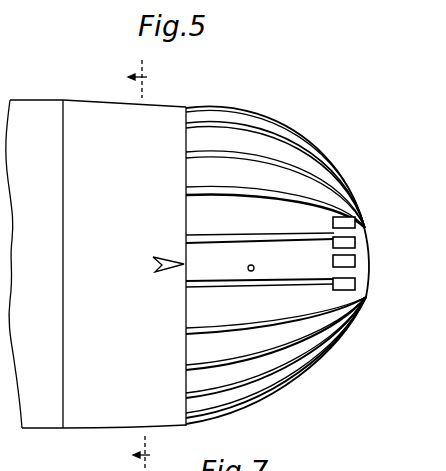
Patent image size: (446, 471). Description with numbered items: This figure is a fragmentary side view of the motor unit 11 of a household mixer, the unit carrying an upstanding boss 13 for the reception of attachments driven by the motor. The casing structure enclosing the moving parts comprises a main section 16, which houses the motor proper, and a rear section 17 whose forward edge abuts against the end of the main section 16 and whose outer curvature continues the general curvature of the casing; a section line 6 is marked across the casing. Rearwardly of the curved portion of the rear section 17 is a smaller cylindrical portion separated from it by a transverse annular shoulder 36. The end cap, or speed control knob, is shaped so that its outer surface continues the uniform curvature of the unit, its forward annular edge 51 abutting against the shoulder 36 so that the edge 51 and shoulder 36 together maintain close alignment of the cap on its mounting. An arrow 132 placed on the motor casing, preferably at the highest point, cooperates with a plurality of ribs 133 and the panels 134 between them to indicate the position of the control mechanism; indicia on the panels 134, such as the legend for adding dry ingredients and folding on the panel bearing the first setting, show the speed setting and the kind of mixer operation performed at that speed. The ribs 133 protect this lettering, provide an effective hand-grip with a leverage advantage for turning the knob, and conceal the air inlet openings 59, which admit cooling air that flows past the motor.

The motor unit 11 is at (54, 438).
The upstanding boss 13 is at (28, 86).
The main section 16 is at (31, 248).
The rear section 17 is at (102, 90).
The section line 6- 6 is at (143, 265).
The annular shoulder 36 is at (192, 392).
The forward annular edge 51 is at (205, 413).
The air inlet openings 59 is at (345, 225).
The arrow 132 is at (163, 274).
The ribs 133 is at (293, 180).
The panels 134 is at (250, 152).